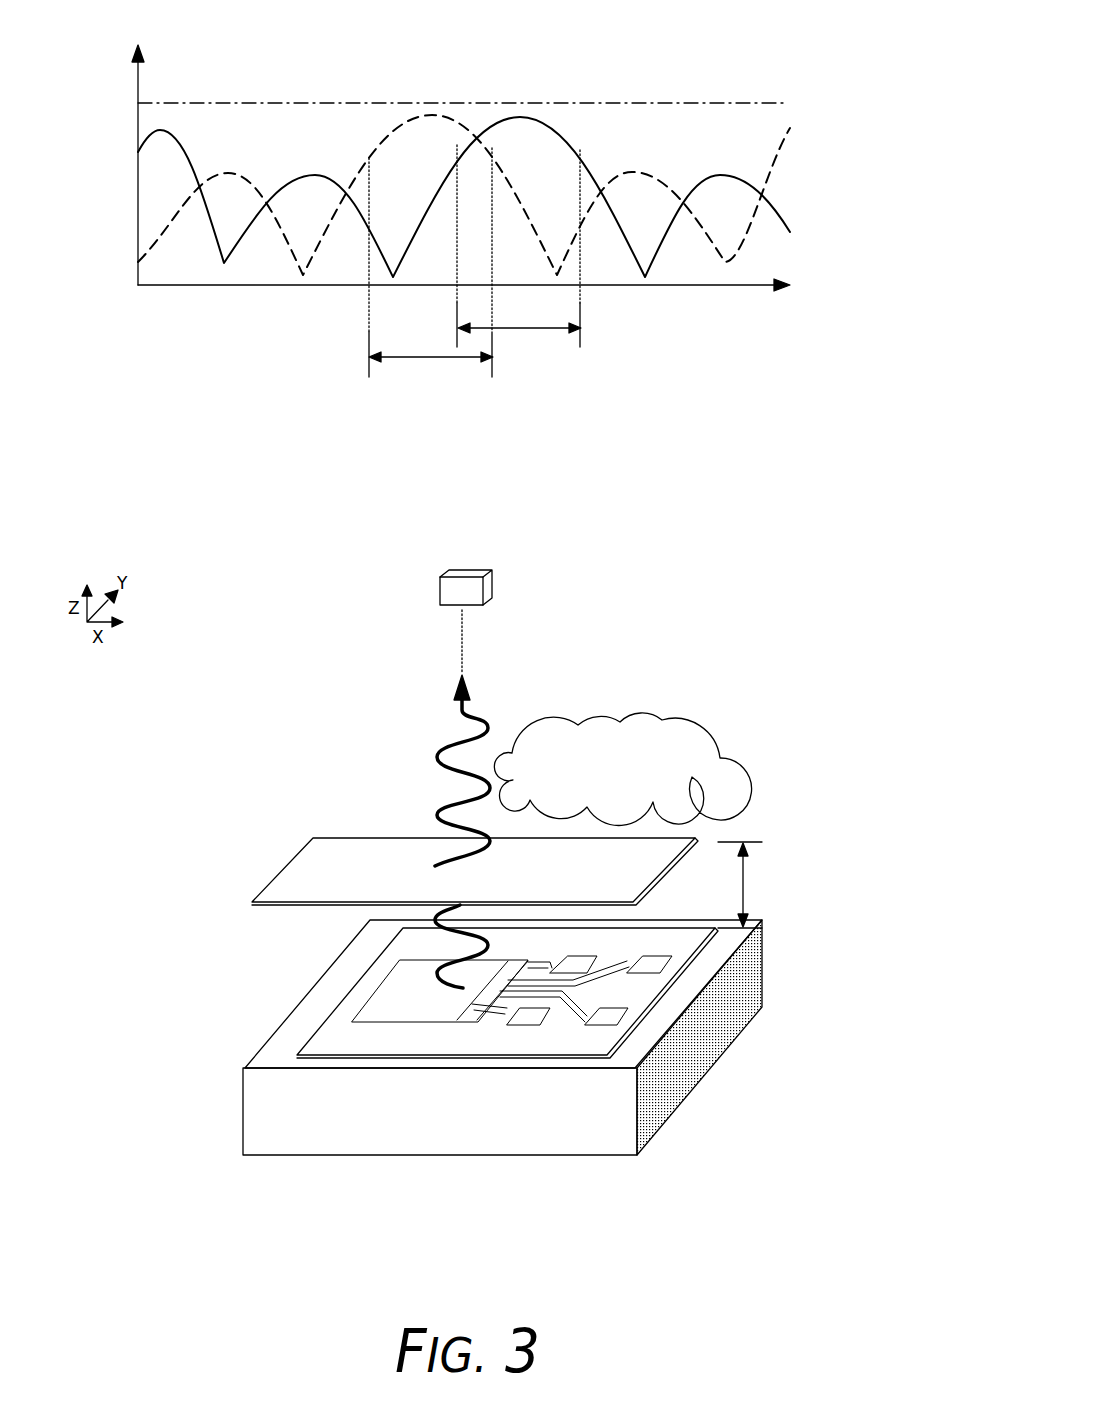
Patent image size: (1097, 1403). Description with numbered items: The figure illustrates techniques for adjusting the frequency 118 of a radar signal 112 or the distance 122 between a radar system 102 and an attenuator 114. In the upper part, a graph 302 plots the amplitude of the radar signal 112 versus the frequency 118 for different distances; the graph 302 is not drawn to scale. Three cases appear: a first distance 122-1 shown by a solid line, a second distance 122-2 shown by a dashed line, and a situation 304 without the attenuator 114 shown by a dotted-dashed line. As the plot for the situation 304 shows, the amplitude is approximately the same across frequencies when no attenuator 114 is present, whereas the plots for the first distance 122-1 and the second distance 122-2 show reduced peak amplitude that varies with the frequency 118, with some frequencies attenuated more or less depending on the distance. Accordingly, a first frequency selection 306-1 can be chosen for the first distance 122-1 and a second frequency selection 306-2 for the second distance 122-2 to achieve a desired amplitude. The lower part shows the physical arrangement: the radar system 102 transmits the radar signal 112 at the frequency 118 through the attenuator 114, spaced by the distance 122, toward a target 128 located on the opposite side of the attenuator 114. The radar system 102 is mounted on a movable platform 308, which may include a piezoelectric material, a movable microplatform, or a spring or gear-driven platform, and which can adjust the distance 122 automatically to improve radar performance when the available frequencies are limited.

The graph 302 is at (684, 24).
The situation without the attenuator 304 is at (342, 103).
The first distance 122-1 is at (588, 167).
The second distance 122-2 is at (366, 158).
The first frequency selection 306-1 is at (519, 329).
The second frequency selection 306-2 is at (432, 358).
The frequency 118 is at (702, 540).
The target 128 is at (487, 598).
The radar signal 112 is at (450, 798).
The attenuator 114 is at (288, 863).
The distance 122 is at (748, 887).
The radar system 102 is at (343, 1000).
The movable platform 308 is at (297, 1157).